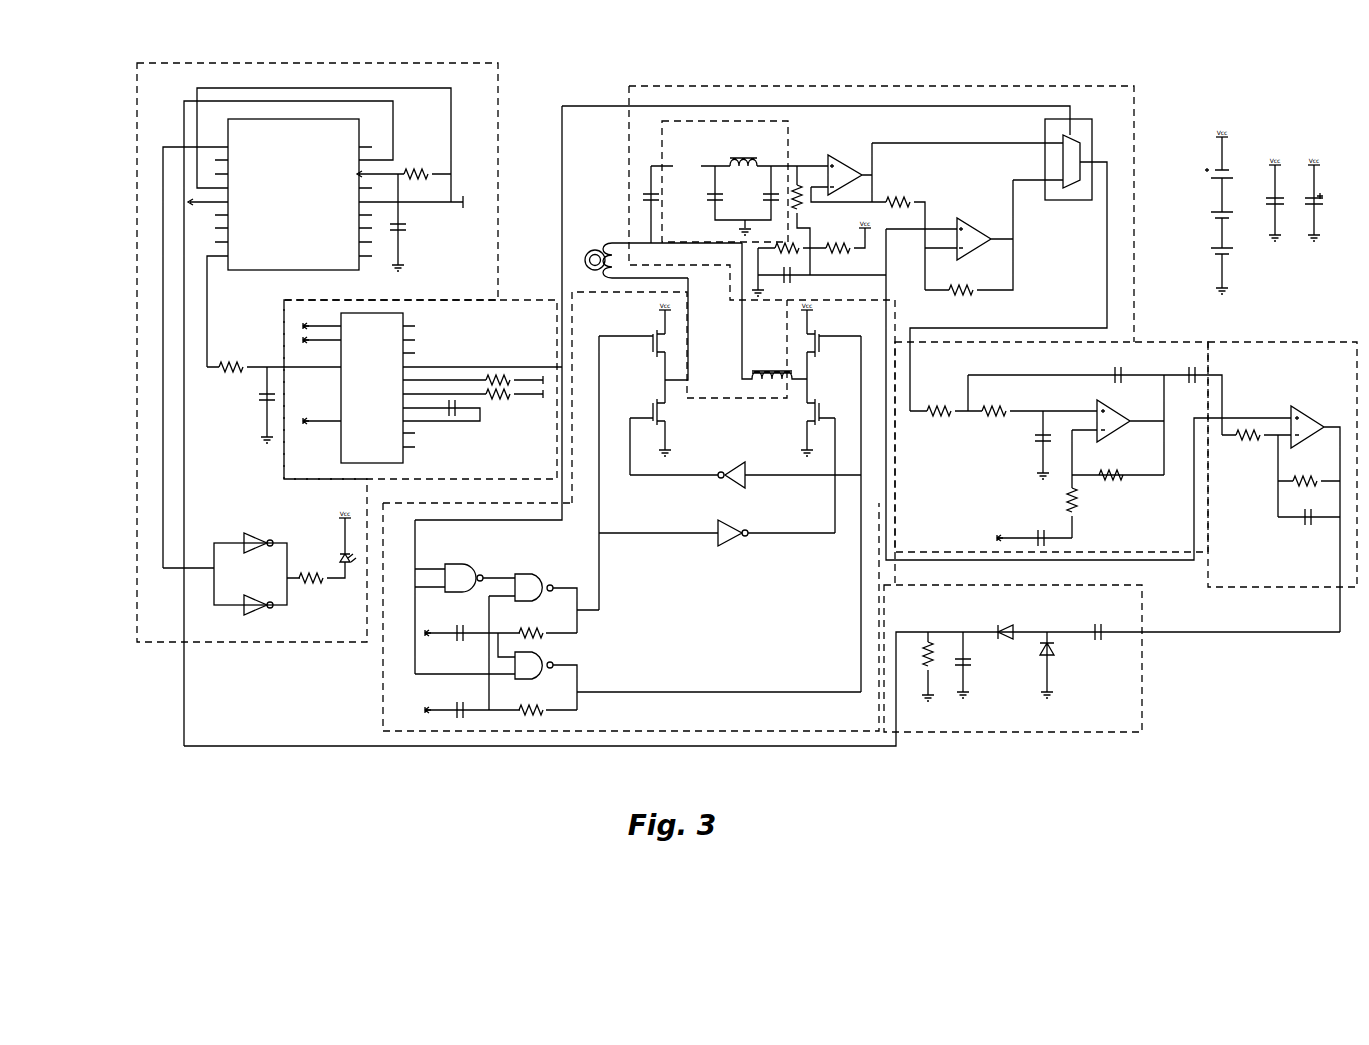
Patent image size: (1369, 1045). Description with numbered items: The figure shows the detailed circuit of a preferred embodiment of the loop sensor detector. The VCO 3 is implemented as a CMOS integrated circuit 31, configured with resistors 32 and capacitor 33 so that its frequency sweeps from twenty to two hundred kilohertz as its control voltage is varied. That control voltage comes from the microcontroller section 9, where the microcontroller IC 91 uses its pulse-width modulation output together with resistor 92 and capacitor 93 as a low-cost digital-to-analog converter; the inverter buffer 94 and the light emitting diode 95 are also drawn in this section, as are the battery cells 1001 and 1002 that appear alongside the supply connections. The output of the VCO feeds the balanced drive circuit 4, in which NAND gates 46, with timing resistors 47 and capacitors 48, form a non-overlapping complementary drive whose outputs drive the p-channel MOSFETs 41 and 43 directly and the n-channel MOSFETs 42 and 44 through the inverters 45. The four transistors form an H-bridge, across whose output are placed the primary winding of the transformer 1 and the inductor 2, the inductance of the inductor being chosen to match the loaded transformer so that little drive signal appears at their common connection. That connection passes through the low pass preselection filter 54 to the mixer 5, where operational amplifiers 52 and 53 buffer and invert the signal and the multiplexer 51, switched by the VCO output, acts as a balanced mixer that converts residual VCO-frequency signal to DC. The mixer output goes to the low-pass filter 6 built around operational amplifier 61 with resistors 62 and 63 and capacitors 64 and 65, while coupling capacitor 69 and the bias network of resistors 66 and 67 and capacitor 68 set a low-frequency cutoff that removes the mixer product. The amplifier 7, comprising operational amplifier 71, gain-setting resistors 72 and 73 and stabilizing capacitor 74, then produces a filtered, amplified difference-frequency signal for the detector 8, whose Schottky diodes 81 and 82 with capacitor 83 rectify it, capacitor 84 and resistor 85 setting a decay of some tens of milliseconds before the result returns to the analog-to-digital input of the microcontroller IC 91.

The transformer 1 is at (657, 245).
The inductor 2 is at (736, 311).
The VCO 3 is at (420, 389).
The CMOS integrated circuit 31 is at (432, 392).
The resistors 32 is at (492, 392).
The capacitor 33 is at (460, 414).
The balanced drive circuit 4 is at (631, 619).
The p-channel enhancement MOSFET 41 is at (635, 456).
The n-channel enhancement MOSFET 42 is at (640, 427).
The p-channel enhancement MOSFET 43 is at (831, 497).
The n-channel enhancement MOSFET 44 is at (829, 456).
The inverters 45 is at (716, 522).
The NAND gates 46 is at (506, 647).
The resistors 47 is at (540, 697).
The capacitors 48 is at (448, 699).
The mixer 5 is at (881, 214).
The multiplexer 51 is at (1049, 159).
The operational amplifier 52 is at (937, 211).
The operational amplifier 53 is at (882, 238).
The low pass preselection filter 54 is at (735, 198).
The low-pass filter 6 is at (1051, 447).
The operational amplifier 61 is at (1118, 431).
The resistor 62 is at (946, 397).
The resistor 63 is at (1032, 395).
The capacitor 64 is at (1025, 445).
The capacitor 65 is at (1066, 363).
The resistor 66 is at (1118, 491).
The resistor 67 is at (1093, 513).
The capacitor 68 is at (1034, 524).
The capacitor 69 is at (1193, 387).
The amplifier 7 is at (1282, 464).
The operational amplifier 71 is at (1317, 507).
The resistor 72 is at (1256, 473).
The resistor 73 is at (1309, 466).
The stabilizing capacitor 74 is at (1309, 534).
The detector 8 is at (1013, 658).
The Schottky diode 81 is at (1068, 665).
The Schottky diode 82 is at (1005, 614).
The capacitor 83 is at (1102, 614).
The capacitor 84 is at (981, 665).
The resistor 85 is at (920, 657).
The microcontroller circuit 9 is at (317, 352).
The microcontroller IC 91 is at (319, 417).
The resistor 92 is at (274, 353).
The capacitor 93 is at (248, 405).
The inverter buffer 94 is at (254, 574).
The light emitting diode 95 is at (329, 537).
The battery 1001 is at (1186, 253).
The battery cell 1002 is at (1186, 170).